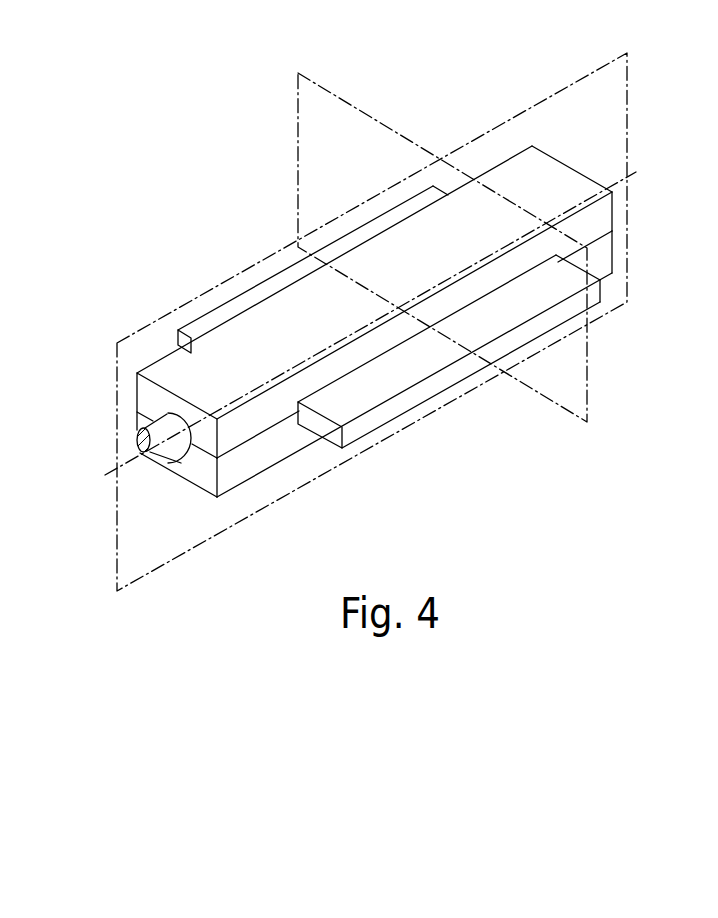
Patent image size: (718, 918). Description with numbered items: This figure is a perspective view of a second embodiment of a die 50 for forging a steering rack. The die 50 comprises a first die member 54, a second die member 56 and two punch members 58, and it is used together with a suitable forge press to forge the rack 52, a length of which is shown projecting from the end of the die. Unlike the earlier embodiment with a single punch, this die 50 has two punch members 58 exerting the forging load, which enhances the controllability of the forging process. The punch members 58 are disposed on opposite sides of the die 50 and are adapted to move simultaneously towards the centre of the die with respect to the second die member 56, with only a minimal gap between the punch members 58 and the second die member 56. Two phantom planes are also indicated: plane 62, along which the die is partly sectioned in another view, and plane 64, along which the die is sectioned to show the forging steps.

The die 50 is at (338, 339).
The rack 52 is at (165, 461).
The first die member 54 is at (147, 400).
The second die member 56 is at (233, 472).
The punch members 58 is at (202, 325).
The plane 62 is at (629, 96).
The plane 64 is at (331, 92).